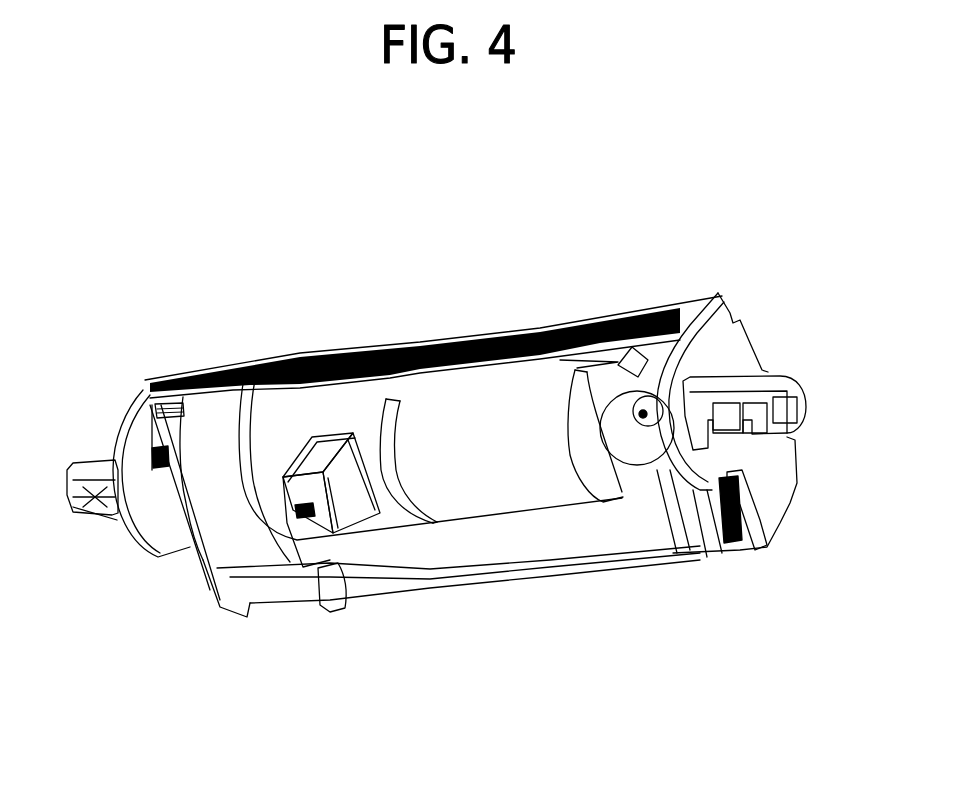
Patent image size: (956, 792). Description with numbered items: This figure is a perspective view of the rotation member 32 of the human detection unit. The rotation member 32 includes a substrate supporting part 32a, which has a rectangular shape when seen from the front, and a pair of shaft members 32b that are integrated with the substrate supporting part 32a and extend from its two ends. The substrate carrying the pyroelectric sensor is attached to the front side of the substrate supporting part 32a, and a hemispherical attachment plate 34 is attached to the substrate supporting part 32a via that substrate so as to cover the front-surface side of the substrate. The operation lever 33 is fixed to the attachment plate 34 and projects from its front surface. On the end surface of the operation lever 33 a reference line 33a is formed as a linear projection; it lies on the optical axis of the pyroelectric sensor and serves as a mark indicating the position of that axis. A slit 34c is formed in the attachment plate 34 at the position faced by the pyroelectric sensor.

The rotation member 32 is at (316, 272).
The substrate supporting part 32a is at (407, 343).
The shaft members 32b is at (100, 473).
The operation lever 33 is at (338, 535).
The reference line 33a is at (310, 518).
The attachment plate 34 is at (505, 497).
The slit 34c is at (403, 420).